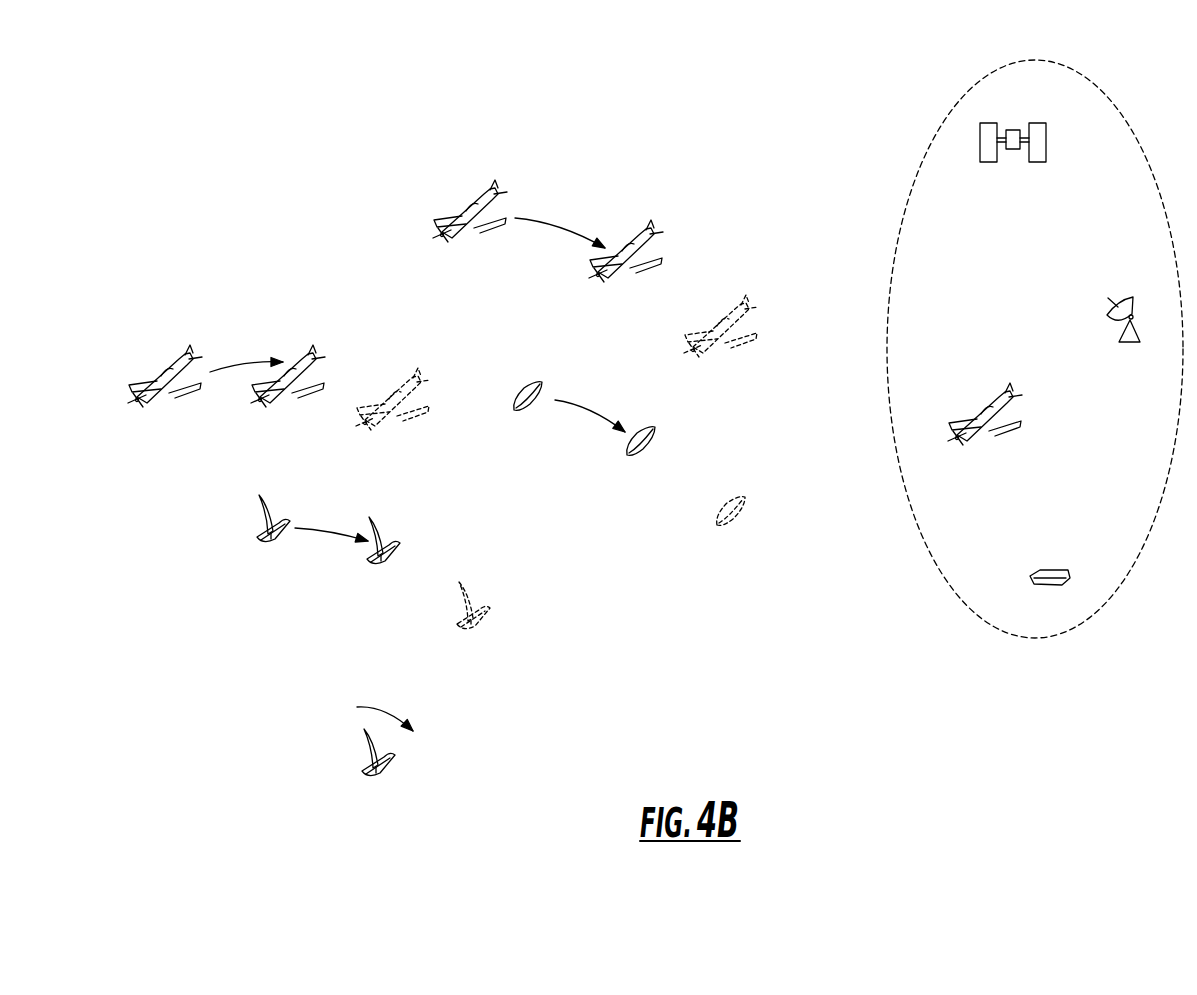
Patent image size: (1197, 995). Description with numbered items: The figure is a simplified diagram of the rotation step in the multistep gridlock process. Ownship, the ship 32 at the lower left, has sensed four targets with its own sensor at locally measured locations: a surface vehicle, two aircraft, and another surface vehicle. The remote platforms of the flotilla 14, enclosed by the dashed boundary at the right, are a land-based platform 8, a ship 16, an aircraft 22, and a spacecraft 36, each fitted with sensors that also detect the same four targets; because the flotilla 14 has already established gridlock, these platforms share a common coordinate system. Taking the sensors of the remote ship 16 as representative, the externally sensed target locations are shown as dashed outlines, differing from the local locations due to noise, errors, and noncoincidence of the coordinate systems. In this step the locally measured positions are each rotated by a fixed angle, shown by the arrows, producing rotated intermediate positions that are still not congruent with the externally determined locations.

The land-based platform 8 is at (1135, 299).
The flotilla 14 is at (980, 618).
The ship 16 is at (1048, 570).
The aircraft 22 is at (997, 425).
The ship (ownship) 32 is at (375, 775).
The spacecraft 36 is at (1016, 150).